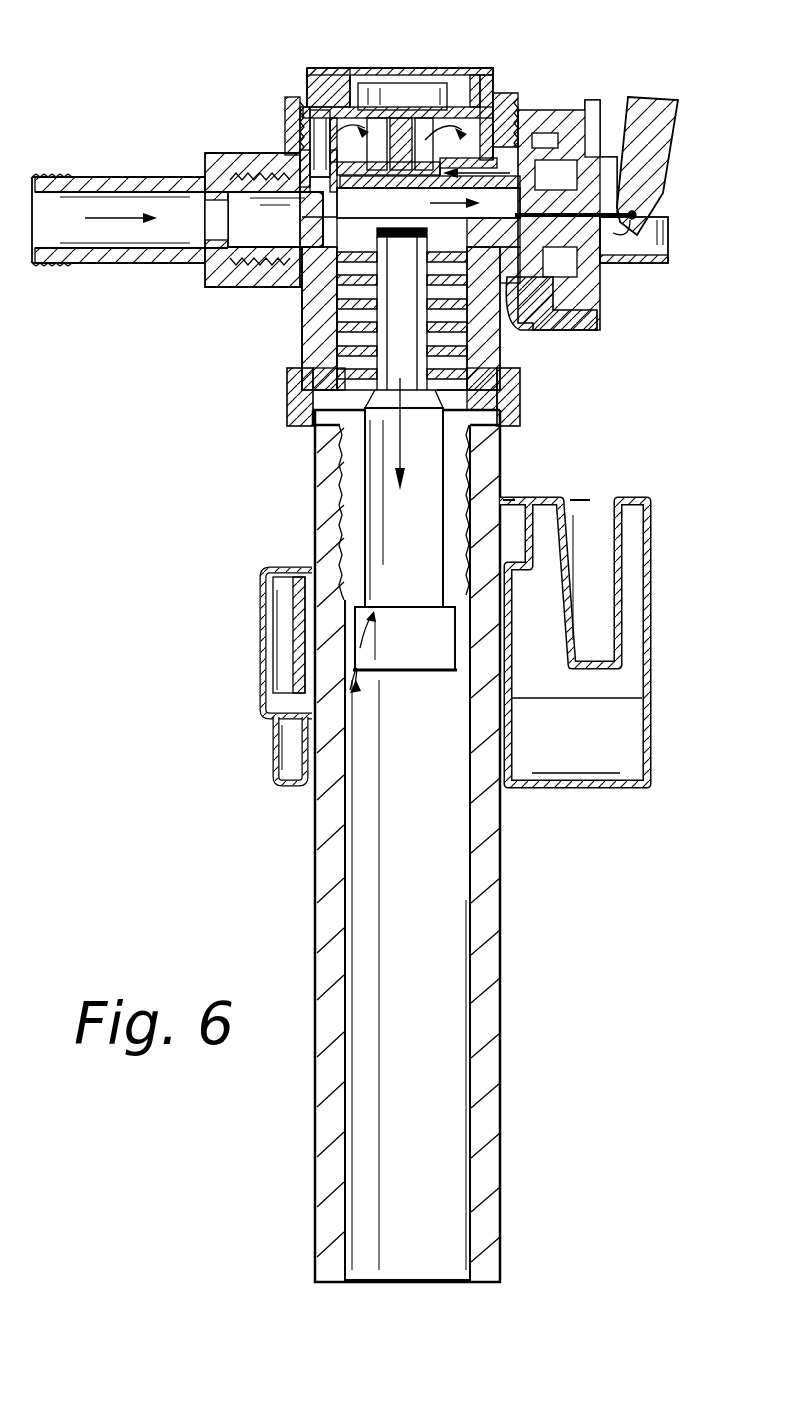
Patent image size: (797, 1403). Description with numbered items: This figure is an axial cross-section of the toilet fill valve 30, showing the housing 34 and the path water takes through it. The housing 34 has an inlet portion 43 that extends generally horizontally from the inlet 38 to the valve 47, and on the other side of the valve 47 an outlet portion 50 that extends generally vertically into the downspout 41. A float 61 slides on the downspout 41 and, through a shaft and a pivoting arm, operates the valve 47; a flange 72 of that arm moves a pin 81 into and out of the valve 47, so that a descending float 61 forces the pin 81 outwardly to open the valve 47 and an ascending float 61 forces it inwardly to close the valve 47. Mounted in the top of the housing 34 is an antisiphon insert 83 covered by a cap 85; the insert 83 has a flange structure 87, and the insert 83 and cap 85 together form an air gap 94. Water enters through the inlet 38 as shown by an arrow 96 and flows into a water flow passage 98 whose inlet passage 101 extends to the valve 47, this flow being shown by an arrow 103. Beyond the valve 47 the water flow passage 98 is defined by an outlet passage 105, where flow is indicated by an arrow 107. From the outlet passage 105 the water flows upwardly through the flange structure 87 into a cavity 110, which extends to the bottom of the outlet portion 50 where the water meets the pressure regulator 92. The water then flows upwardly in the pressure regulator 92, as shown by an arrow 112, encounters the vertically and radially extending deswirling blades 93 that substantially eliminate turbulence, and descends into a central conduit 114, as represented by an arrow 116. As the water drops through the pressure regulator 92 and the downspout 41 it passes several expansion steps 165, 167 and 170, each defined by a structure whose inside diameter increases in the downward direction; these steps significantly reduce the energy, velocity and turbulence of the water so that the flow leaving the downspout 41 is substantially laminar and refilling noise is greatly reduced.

The fill valve 30 is at (172, 430).
The housing 34 is at (262, 299).
The inlet 38 is at (168, 138).
The downspout 41 is at (495, 960).
The inlet portion 43 is at (283, 187).
The valve 47 is at (578, 82).
The outlet portion 50 is at (330, 330).
The float 61 is at (652, 627).
The flange 72 is at (655, 195).
The pin 81 is at (612, 262).
The antisiphon insert 83 is at (408, 88).
The cap 85 is at (333, 70).
The flange structure 87 is at (432, 80).
The pressure regulator 92 is at (290, 360).
The deswirling blades 93 is at (340, 285).
The air gap 94 is at (480, 110).
The arrow 96 is at (113, 214).
The water flow passage 98 is at (240, 222).
The inlet passage 101 is at (532, 290).
The arrow 103 is at (428, 193).
The outlet passage 105 is at (333, 157).
The arrow 107 is at (505, 100).
The cavity 110 is at (298, 110).
The arrow 112 is at (515, 362).
The central conduit 114 is at (500, 400).
The arrow 116 is at (398, 453).
The expansion step 165 is at (387, 377).
The expansion step 167 is at (360, 622).
The expansion step 170 is at (350, 693).